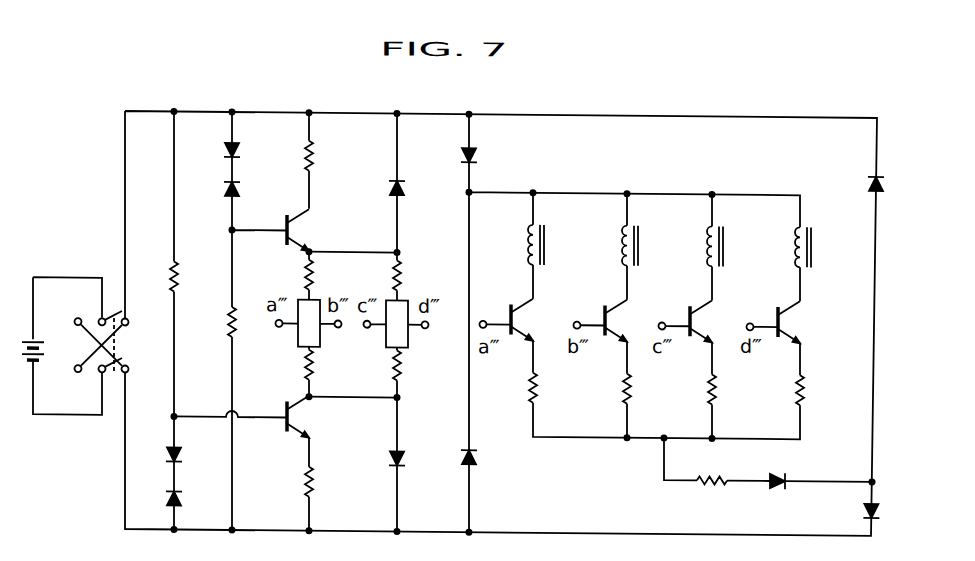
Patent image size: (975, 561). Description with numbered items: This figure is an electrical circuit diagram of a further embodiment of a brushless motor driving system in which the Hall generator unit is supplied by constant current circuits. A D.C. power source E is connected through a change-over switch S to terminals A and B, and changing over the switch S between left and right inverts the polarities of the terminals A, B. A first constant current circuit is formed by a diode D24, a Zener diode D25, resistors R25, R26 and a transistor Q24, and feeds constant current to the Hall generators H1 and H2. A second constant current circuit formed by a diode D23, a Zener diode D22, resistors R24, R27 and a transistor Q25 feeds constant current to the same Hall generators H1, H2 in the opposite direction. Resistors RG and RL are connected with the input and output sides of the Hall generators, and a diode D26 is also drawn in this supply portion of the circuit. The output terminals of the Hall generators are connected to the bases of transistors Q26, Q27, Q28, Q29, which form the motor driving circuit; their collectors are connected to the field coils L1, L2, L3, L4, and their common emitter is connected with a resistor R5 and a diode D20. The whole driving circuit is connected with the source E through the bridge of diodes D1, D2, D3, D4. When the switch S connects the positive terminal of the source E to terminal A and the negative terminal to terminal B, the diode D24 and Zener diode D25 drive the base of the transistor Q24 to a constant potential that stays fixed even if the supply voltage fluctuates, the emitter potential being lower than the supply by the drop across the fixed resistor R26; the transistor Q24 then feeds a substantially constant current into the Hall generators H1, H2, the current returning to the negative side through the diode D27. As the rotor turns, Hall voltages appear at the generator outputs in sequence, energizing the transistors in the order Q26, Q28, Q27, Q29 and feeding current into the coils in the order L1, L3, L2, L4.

The D.C. power source E is at (44, 332).
The change-over switch S is at (97, 361).
The terminal A is at (131, 312).
The terminal B is at (132, 382).
The resistor R24 is at (176, 280).
The resistor R25 is at (227, 322).
The fixed resistor R26 is at (313, 156).
The resistor R27 is at (302, 481).
The resistor connected with input side of the Hall generators RG is at (302, 273).
The resistor connected with output side of the Hall generators RL is at (302, 368).
The resistor R5 is at (712, 481).
The diode D1 is at (478, 153).
The diode D2 is at (478, 456).
The diode D3 is at (868, 174).
The diode D4 is at (872, 495).
The diode D20 is at (776, 484).
The Zener diode D22 is at (176, 456).
The diode D23 is at (177, 497).
The diode D24 is at (241, 150).
The Zener diode D25 is at (241, 183).
The diode D26 is at (388, 183).
The diode D27 is at (390, 458).
The transistor Q24 is at (300, 228).
The transistor Q25 is at (300, 418).
The transistor Q26 is at (520, 320).
The transistor Q27 is at (614, 320).
The transistor Q28 is at (699, 320).
The transistor Q29 is at (787, 320).
The field coil L1 is at (548, 233).
The field coil L2 is at (642, 233).
The field coil L3 is at (727, 232).
The field coil L4 is at (815, 231).
The Hall generator H1 is at (316, 297).
The Hall generator H2 is at (404, 297).